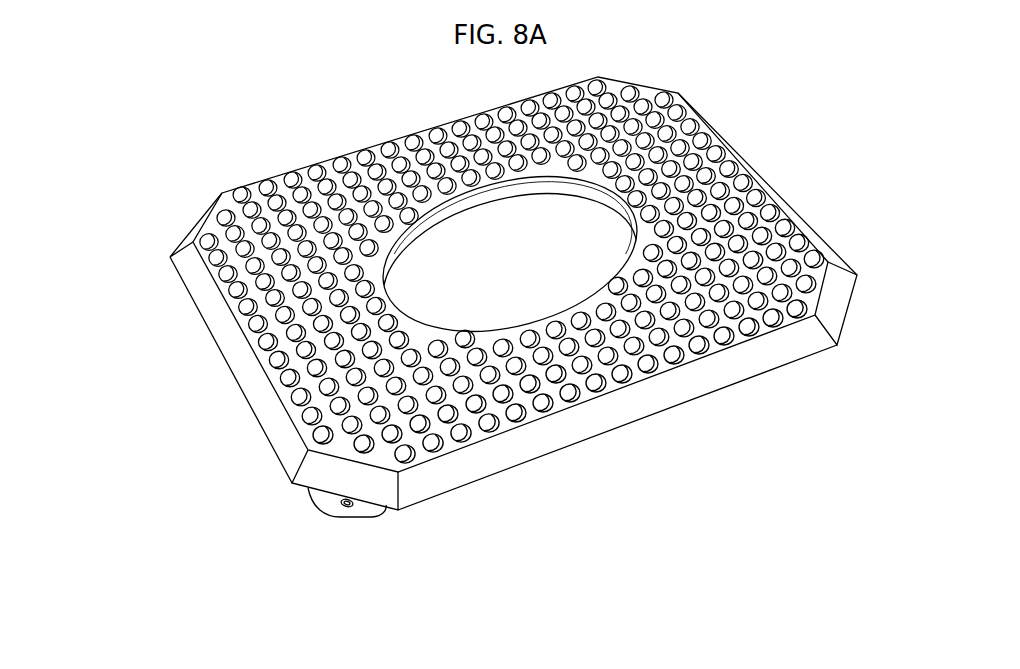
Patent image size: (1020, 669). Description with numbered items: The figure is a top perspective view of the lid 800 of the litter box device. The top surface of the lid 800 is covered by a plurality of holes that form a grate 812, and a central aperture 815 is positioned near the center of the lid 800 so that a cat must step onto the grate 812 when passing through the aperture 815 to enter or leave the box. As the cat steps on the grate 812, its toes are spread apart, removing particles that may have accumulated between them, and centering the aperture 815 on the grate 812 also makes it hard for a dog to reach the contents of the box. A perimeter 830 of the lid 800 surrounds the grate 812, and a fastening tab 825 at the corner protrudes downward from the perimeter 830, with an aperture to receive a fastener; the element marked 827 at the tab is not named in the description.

The lid 800 is at (172, 153).
The grate 812 is at (263, 300).
The central aperture 815 is at (487, 245).
The fastening tab 825 is at (368, 511).
The fastener 827 is at (342, 504).
The perimeter 830 is at (762, 362).